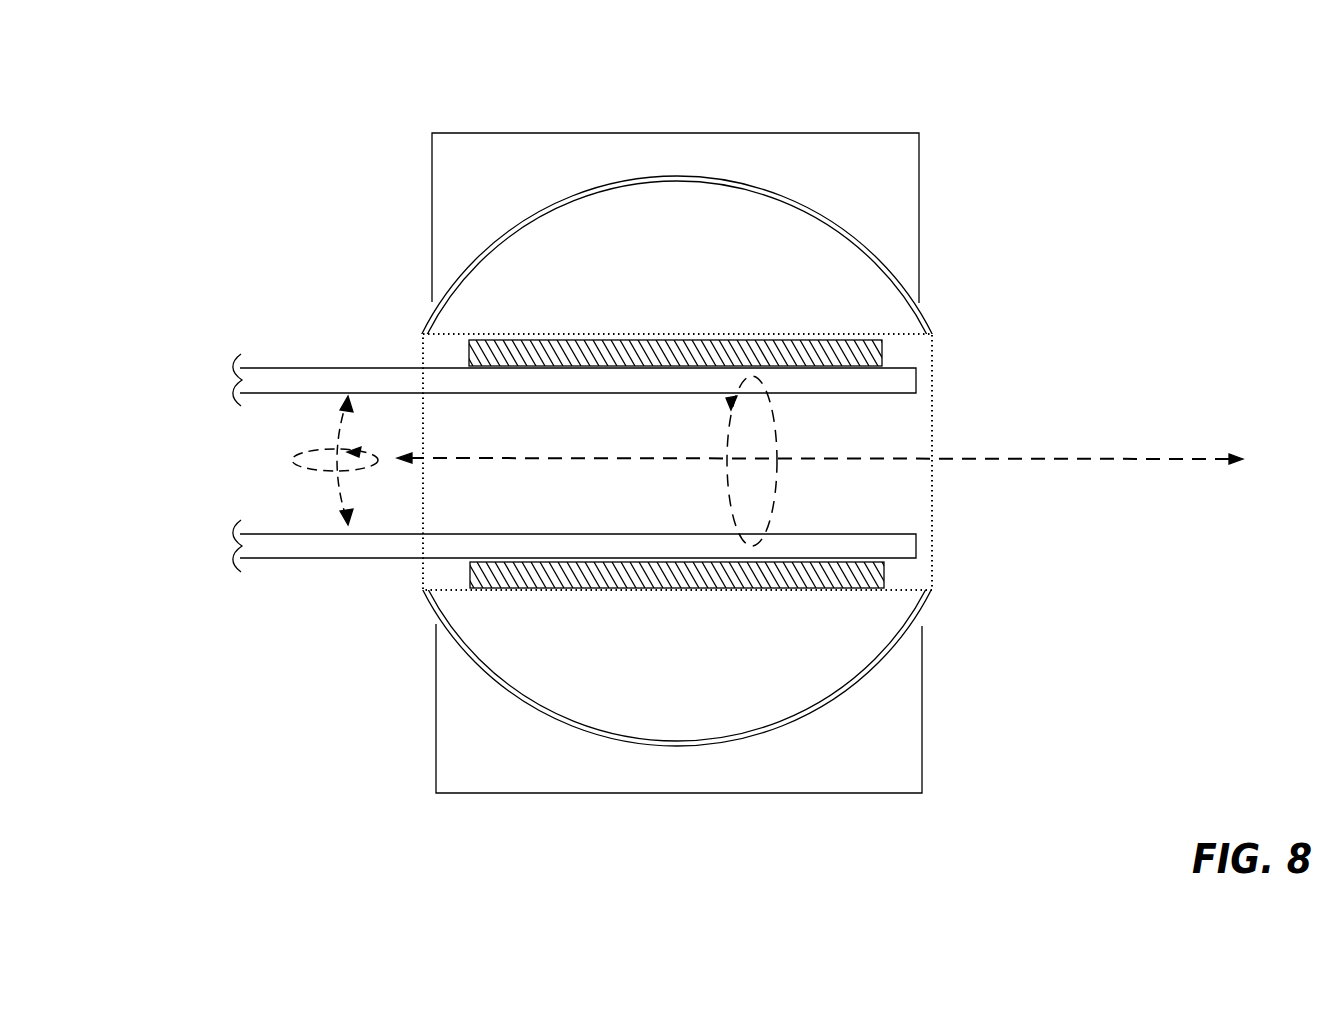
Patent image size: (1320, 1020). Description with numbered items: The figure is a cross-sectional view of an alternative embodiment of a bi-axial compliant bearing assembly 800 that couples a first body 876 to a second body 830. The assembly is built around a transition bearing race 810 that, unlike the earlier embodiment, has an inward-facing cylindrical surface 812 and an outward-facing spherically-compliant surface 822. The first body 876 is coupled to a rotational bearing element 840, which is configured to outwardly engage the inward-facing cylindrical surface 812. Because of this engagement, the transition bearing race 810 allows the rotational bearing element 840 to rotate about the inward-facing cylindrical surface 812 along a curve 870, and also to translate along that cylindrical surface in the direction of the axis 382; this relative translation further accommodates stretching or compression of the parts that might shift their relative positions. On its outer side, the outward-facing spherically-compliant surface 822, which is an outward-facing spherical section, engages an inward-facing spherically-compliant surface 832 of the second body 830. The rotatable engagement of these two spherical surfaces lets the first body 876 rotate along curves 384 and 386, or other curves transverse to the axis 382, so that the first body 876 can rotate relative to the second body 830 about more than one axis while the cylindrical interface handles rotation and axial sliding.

The bi-axial compliant bearing assembly 800 is at (96, 108).
The transition bearing race 810 is at (512, 268).
The inward-facing cylindrical surface 812 is at (908, 336).
The outward-facing spherically-compliant surface 822 is at (627, 180).
The second body 830 is at (801, 167).
The inward-facing spherically-compliant surface 832 is at (554, 200).
The rotational bearing element 840 is at (867, 337).
The curve 870 is at (777, 448).
The first body 876 is at (298, 366).
The axis 382 is at (542, 457).
The curve 384 is at (338, 443).
The curve 386 is at (292, 463).